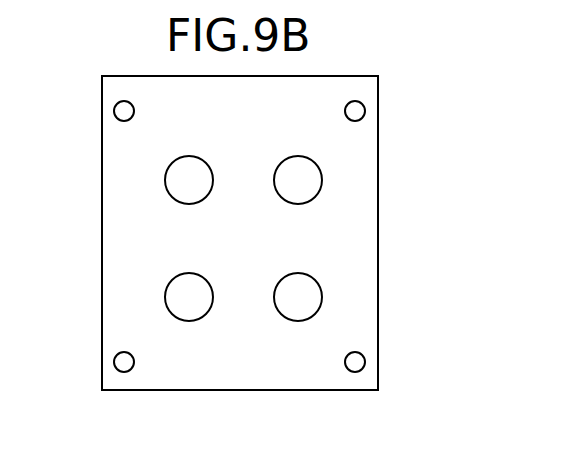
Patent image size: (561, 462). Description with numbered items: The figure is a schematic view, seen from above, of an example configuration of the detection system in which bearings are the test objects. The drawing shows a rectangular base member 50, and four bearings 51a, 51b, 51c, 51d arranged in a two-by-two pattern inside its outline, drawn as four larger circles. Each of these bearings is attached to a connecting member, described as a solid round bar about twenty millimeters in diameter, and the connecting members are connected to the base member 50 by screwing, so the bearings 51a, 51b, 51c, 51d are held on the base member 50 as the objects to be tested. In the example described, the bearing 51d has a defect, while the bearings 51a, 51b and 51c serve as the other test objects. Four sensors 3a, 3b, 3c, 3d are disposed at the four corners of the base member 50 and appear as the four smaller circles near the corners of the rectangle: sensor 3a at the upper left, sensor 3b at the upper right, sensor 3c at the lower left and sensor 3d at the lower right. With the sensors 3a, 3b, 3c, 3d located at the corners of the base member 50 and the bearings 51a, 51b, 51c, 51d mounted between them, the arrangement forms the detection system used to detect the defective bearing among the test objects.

The base member 50 is at (237, 389).
The sensor 3a is at (113, 110).
The sensor 3b is at (364, 110).
The sensor 3c is at (113, 361).
The sensor 3d is at (364, 361).
The bearing 51a is at (164, 179).
The bearing 51b is at (321, 179).
The bearing 51c is at (164, 296).
The bearing 51d is at (321, 296).